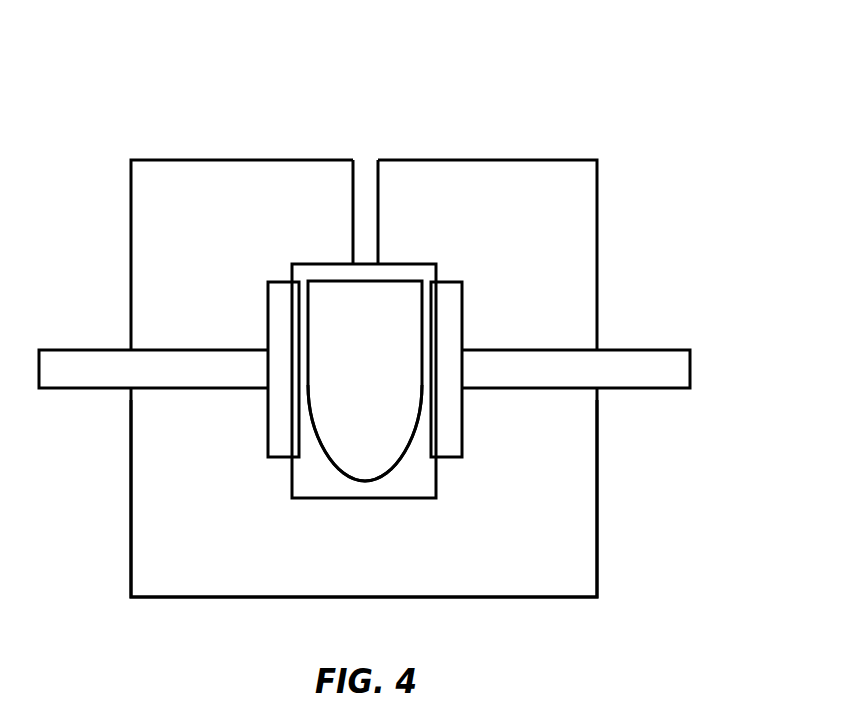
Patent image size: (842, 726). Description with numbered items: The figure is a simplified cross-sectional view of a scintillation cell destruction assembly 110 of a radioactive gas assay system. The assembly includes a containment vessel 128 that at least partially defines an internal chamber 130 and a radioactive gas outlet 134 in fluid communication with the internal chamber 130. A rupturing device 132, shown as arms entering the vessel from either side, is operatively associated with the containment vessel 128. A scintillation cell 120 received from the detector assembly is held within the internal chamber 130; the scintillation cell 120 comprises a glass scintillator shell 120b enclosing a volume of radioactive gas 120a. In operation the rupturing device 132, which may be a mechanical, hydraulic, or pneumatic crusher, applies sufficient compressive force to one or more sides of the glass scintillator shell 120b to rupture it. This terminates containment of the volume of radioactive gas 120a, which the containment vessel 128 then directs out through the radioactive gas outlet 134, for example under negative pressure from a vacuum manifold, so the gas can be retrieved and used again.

The scintillation cell destruction assembly 110 is at (150, 126).
The radioactive gas outlet 134 is at (370, 211).
The rupturing device 132 is at (542, 350).
The internal chamber 130 is at (305, 483).
The containment vessel 128 is at (344, 560).
The scintillation cell 120 is at (551, 452).
The volume of radioactive gas 120a is at (360, 459).
The glass scintillator shell 120b is at (403, 457).